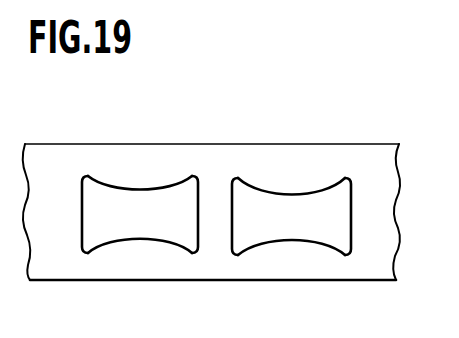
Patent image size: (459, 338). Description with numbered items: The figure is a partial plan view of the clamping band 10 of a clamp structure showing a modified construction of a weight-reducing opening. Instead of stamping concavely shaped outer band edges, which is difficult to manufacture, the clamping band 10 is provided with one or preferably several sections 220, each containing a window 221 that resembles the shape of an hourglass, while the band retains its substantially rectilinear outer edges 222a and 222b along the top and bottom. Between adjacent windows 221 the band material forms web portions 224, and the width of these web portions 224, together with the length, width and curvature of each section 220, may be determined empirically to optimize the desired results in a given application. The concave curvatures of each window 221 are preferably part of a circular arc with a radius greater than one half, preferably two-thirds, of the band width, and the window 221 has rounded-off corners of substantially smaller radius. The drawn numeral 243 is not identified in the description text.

The clamping band 10 is at (211, 199).
The section 220 is at (252, 209).
The window 221 is at (158, 210).
The outer edge 222a is at (208, 143).
The outer edge 222b is at (117, 280).
The web portion 224 is at (212, 212).
The concave edge of slot 243 is at (131, 190).